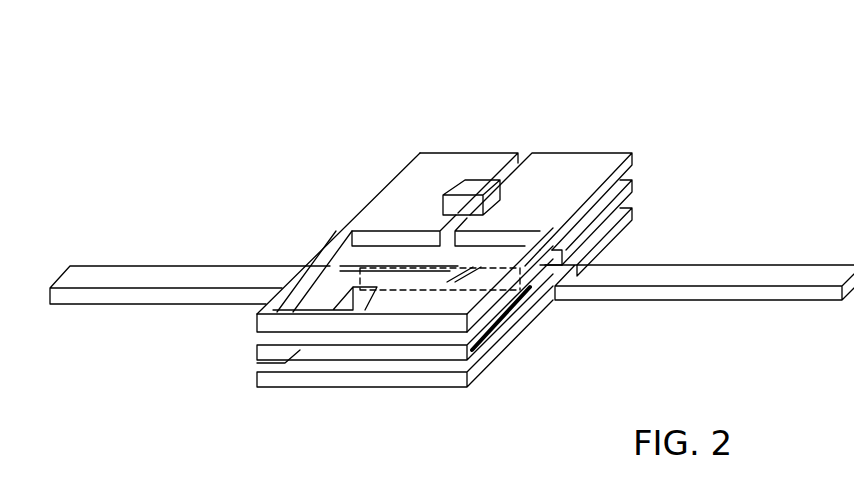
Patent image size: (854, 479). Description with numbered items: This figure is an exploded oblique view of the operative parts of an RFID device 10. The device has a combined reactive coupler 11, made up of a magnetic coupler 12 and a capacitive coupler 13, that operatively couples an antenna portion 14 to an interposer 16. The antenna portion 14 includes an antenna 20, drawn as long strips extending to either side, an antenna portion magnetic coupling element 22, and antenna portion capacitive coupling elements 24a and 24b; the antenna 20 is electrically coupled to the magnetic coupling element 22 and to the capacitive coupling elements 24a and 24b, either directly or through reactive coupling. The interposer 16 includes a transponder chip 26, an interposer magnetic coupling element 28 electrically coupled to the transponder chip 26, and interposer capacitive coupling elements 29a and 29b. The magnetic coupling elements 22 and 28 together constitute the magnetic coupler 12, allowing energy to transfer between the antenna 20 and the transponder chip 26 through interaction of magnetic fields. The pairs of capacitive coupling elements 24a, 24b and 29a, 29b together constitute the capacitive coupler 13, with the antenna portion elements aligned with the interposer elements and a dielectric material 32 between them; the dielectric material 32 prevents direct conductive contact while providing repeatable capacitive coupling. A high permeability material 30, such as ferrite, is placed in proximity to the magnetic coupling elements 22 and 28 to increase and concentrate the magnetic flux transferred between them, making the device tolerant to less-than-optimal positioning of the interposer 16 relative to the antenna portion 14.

The RFID device 10 is at (203, 117).
The combined reactive coupler 11 is at (293, 82).
The magnetic coupler 12 is at (214, 330).
The capacitive coupler 13 is at (340, 165).
The antenna portion 14 is at (157, 226).
The interposer 16 is at (398, 140).
The antenna 20 is at (95, 290).
The antenna portion magnetic coupling element 22 is at (438, 395).
The antenna portion capacitive coupling element 24a is at (420, 282).
The antenna portion capacitive coupling element 24b is at (636, 212).
The transponder chip 26 is at (468, 188).
The interposer magnetic coupling element 28 is at (330, 247).
The interposer capacitive coupling element 29a is at (441, 160).
The interposer capacitive coupling element 29b is at (598, 150).
The high permeability material 30 is at (480, 345).
The dielectric material 32 is at (636, 185).